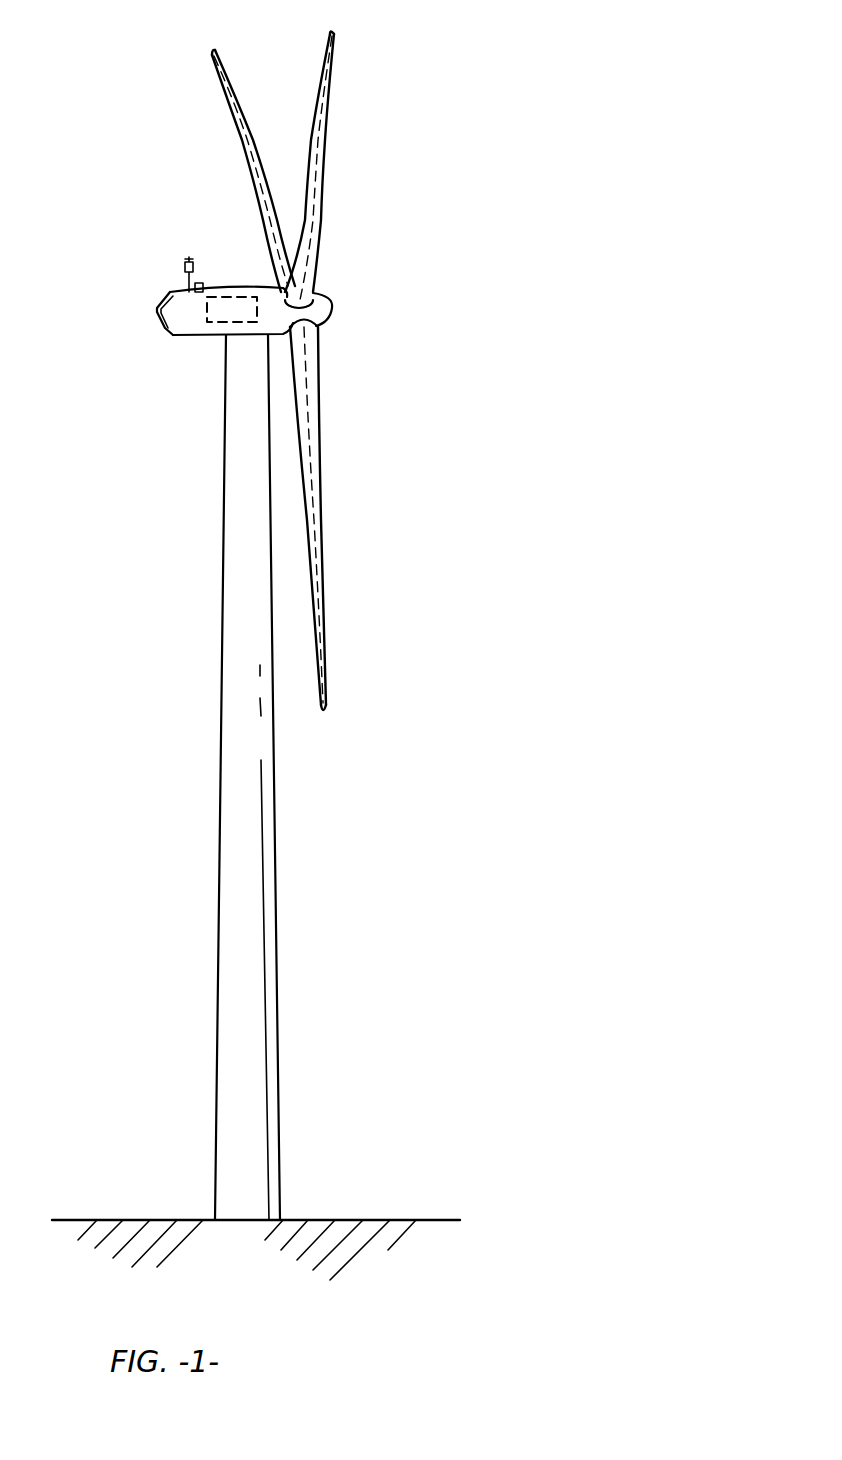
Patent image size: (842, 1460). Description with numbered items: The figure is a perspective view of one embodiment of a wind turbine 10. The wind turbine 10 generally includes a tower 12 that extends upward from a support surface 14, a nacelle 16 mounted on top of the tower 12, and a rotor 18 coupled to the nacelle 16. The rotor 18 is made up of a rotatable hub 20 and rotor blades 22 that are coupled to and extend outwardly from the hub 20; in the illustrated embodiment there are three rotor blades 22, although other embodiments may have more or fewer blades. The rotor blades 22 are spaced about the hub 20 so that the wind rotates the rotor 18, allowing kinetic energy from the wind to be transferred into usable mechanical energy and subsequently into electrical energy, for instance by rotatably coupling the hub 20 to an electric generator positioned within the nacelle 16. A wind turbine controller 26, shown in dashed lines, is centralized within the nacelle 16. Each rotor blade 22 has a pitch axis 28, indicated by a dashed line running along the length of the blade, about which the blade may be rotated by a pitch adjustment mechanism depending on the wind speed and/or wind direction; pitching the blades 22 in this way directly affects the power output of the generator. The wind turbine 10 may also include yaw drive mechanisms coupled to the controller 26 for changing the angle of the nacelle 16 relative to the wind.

The wind turbine 10 is at (457, 116).
The tower 12 is at (233, 898).
The support surface 14 is at (140, 1220).
The nacelle 16 is at (202, 337).
The rotor 18 is at (333, 286).
The rotatable hub 20 is at (330, 315).
The rotor blade 22 is at (323, 75).
The wind turbine controller 26 is at (237, 297).
The pitch axis 28 is at (327, 173).